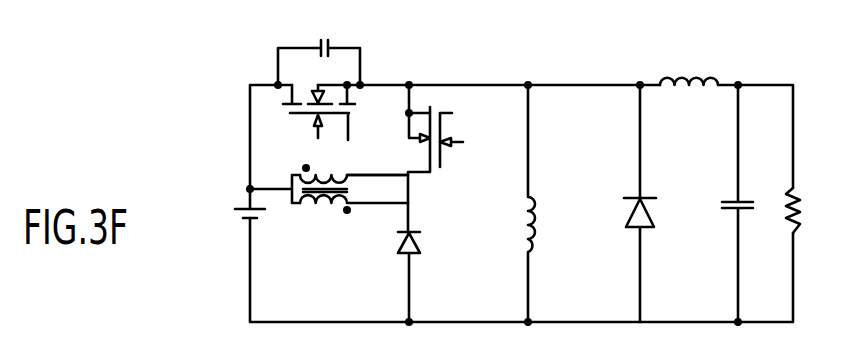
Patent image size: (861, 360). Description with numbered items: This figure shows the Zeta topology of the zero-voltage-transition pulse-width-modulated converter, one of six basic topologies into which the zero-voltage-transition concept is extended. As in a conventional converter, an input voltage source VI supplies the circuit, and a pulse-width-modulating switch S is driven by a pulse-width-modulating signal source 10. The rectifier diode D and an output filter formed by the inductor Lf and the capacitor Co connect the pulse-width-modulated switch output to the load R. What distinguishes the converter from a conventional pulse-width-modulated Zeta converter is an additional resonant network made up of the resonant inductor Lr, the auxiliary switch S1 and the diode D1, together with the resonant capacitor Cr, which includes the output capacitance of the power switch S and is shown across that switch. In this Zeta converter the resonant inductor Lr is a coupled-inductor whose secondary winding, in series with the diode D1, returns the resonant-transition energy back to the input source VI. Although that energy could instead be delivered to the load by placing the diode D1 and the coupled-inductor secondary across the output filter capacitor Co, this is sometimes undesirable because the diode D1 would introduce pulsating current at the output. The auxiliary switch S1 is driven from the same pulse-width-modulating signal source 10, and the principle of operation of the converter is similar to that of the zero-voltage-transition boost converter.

The resonant capacitor Cr is at (319, 50).
The pulse-width-modulating switch S is at (315, 115).
The pulse-width-modulating signal source 10 is at (401, 132).
The auxiliary switch S1 is at (420, 130).
The voltage source VI is at (233, 210).
The resonant inductor Lr is at (329, 205).
The diode D1 is at (424, 262).
The inductor Lf is at (547, 203).
The diode D is at (648, 203).
The capacitor Co is at (724, 203).
The load R is at (802, 210).